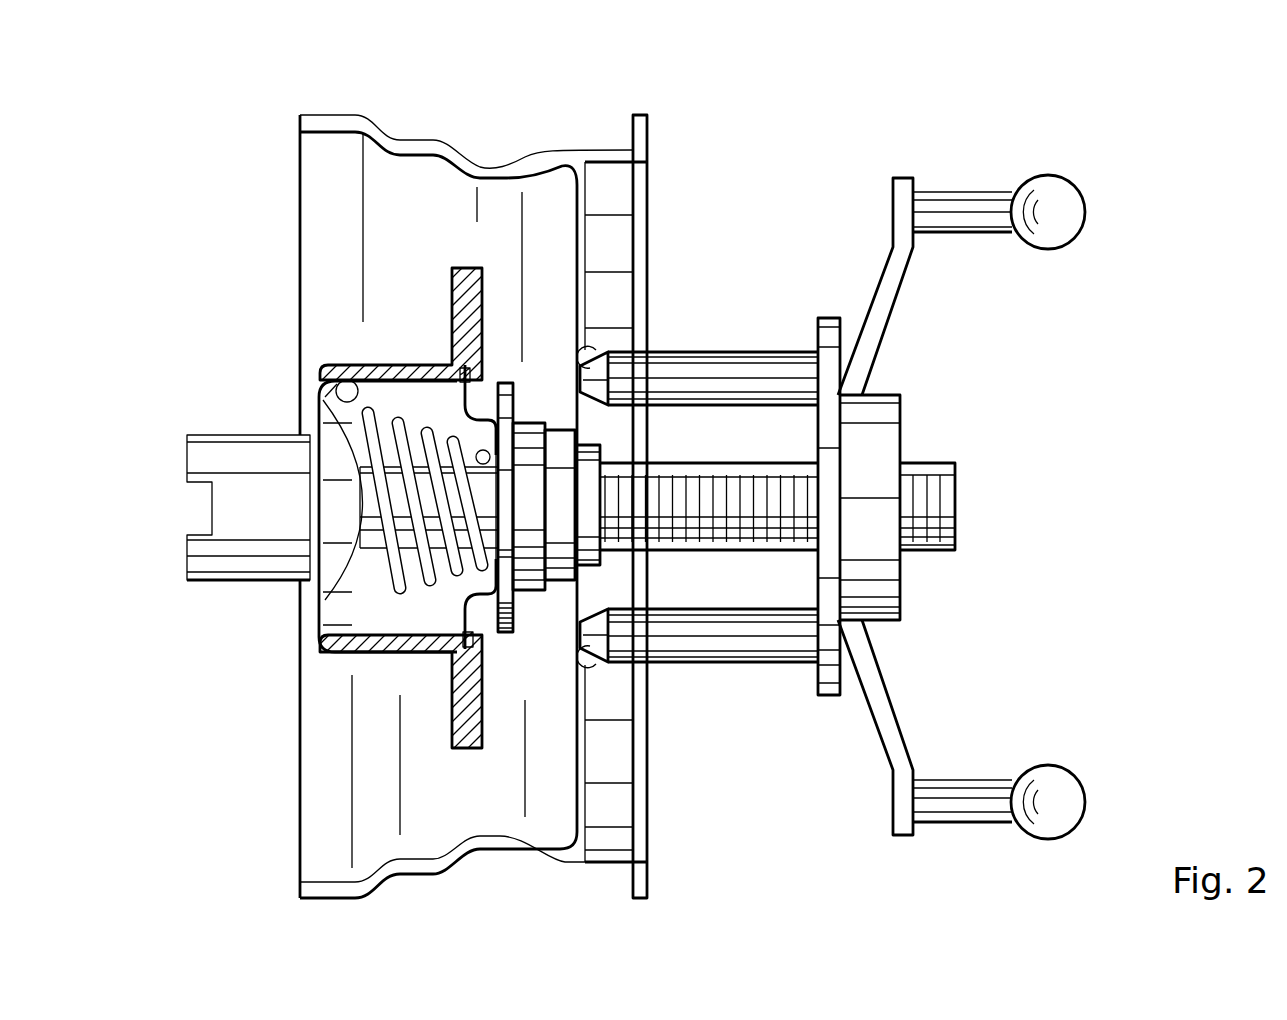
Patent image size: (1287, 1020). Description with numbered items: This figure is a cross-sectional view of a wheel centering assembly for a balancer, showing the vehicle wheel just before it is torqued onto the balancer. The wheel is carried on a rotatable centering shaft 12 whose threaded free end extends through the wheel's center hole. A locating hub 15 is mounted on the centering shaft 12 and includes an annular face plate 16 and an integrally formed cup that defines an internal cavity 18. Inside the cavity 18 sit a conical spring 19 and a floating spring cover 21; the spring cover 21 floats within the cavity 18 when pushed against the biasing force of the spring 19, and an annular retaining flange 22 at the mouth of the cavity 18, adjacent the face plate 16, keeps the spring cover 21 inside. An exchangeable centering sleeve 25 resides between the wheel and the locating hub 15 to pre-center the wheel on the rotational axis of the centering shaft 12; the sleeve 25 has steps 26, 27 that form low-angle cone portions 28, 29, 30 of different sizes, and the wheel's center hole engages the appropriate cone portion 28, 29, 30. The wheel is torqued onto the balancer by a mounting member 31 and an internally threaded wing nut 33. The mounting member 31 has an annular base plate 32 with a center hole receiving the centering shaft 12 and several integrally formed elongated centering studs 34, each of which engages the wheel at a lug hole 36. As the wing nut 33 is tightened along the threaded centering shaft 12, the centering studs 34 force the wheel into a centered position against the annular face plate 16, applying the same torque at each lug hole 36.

The centering shaft 12 is at (938, 462).
The locating hub 15 is at (457, 266).
The annular face plate 16 is at (508, 378).
The internal cavity 18 is at (337, 383).
The conical spring 19 is at (393, 570).
The floating spring cover 21 is at (450, 628).
The annular retaining flange 22 is at (514, 395).
The exchangeable centering sleeve 25 is at (577, 350).
The step 26 is at (555, 427).
The step 27 is at (598, 447).
The low-angle cone portion 28 is at (578, 722).
The low-angle cone portion 29 is at (580, 702).
The low-angle cone portion 30 is at (593, 571).
The mounting member 31 is at (760, 268).
The annular base plate 32 is at (830, 693).
The internally-threaded wing nut 33 is at (977, 192).
The centering stud 34 is at (774, 350).
The lug hole 36 is at (592, 347).